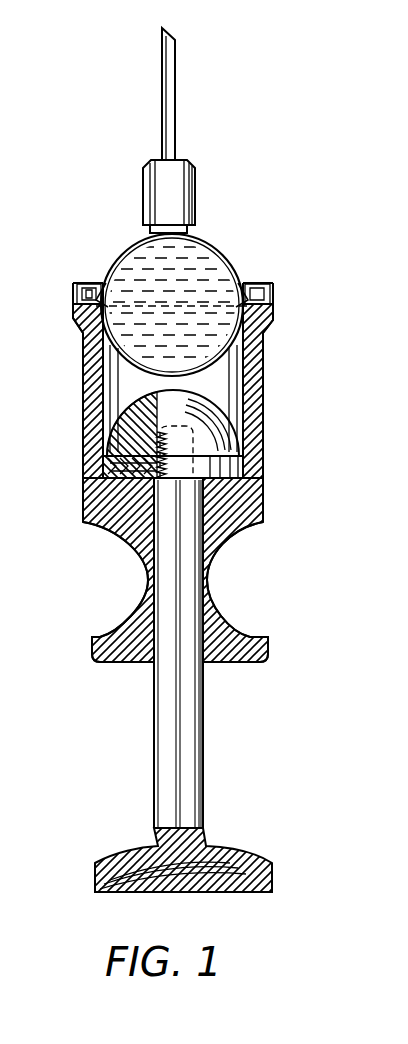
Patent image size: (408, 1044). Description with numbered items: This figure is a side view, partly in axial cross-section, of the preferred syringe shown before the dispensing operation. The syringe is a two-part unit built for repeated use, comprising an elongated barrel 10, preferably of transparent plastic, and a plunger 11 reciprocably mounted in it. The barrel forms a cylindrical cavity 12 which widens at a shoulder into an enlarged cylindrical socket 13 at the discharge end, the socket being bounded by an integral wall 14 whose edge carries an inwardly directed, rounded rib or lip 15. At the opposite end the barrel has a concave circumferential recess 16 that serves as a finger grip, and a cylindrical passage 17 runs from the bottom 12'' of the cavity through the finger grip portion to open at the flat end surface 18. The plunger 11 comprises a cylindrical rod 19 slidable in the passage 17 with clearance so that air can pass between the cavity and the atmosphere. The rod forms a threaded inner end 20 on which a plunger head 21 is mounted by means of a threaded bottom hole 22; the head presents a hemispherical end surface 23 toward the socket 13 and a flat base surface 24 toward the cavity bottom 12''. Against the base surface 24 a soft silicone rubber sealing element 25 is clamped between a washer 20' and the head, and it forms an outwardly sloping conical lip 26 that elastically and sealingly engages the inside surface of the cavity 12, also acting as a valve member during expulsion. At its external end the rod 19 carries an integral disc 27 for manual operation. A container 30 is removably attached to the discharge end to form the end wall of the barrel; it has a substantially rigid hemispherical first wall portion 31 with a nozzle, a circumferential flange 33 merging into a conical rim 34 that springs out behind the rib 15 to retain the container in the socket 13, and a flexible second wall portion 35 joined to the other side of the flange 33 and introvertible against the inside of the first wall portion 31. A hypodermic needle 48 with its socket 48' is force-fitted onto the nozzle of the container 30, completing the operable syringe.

The barrel 10 is at (274, 358).
The plunger 11 is at (151, 715).
The cylindrical cavity 12 is at (151, 380).
The bottom of cavity 12'' is at (202, 570).
The cylindrical socket 13 is at (92, 283).
The wall 14 is at (274, 312).
The rib or lip 15 is at (88, 290).
The circumferential recess 16 is at (209, 582).
The cylindrical passage 17 is at (146, 588).
The flat end surface 18 is at (233, 663).
The cylindrical rod 19 is at (190, 742).
The threaded inner end 20 is at (241, 450).
The washer 20' is at (93, 484).
The plunger head 21 is at (216, 409).
The threaded bottom hole 22 is at (128, 422).
The hemispherical end surface 23 is at (138, 392).
The flat base surface 24 is at (95, 516).
The sealing element 25 is at (160, 450).
The conical lip 26 is at (112, 468).
The disc 27 is at (250, 862).
The container 30 is at (236, 243).
The first wall portion 31 is at (128, 248).
The circumferential flange 33 is at (253, 290).
The conical rim 34 is at (76, 298).
The second wall portion 35 is at (248, 373).
The hypodermic needle 48 is at (197, 94).
The socket 48' is at (203, 191).